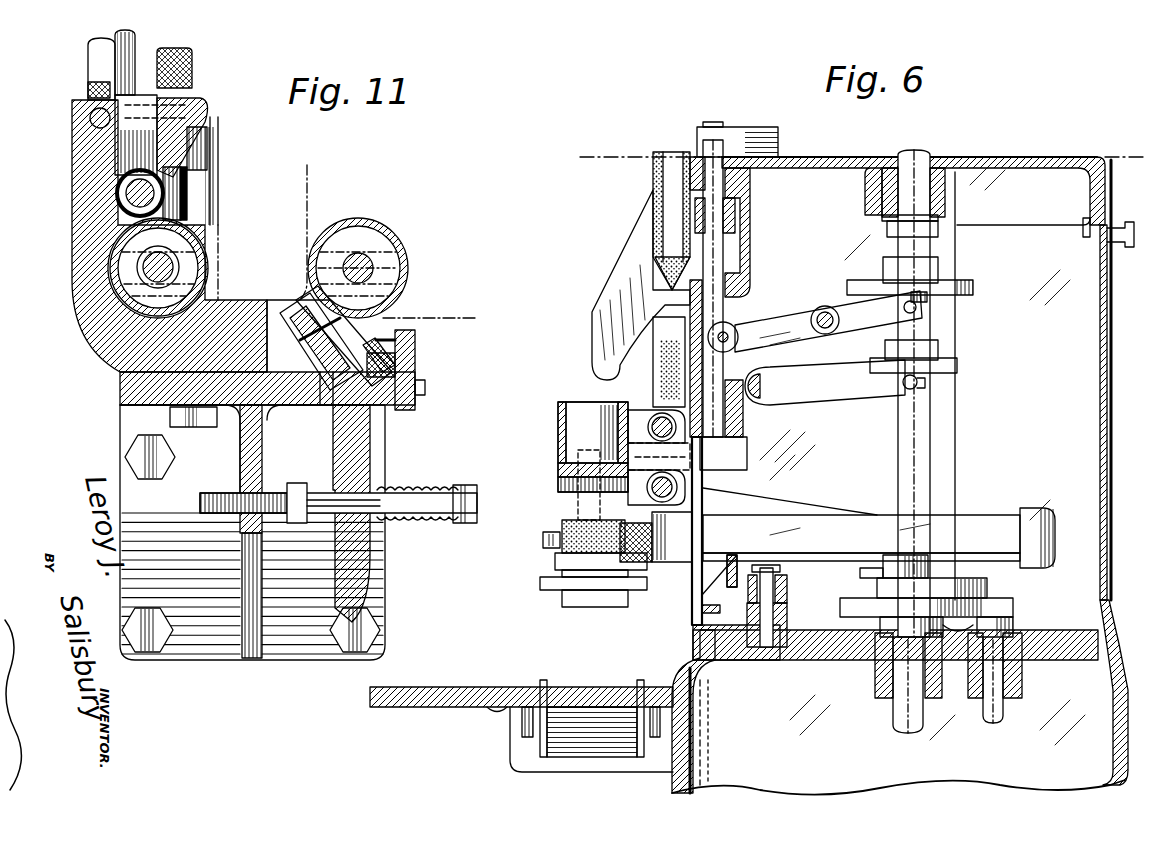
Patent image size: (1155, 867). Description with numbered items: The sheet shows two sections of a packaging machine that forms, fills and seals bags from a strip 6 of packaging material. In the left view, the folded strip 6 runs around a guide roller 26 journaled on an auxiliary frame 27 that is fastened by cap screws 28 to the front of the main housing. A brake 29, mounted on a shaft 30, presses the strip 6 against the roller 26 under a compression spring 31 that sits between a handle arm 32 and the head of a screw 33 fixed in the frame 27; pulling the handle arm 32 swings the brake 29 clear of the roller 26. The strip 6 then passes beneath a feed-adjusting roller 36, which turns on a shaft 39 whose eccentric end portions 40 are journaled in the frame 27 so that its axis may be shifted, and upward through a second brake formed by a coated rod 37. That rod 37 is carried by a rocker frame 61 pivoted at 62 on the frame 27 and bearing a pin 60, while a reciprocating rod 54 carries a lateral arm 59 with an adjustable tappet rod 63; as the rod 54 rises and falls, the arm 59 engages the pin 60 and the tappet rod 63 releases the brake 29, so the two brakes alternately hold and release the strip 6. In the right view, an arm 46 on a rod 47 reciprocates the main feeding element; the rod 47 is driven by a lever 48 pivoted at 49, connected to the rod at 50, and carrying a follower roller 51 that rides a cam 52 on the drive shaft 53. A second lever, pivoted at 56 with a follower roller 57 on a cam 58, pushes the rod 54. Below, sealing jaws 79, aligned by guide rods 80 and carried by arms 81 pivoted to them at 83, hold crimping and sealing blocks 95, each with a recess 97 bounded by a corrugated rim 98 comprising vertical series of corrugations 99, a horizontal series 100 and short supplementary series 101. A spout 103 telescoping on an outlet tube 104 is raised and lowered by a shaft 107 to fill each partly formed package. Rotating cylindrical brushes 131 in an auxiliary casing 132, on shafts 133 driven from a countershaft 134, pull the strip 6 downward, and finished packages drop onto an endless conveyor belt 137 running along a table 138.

In FIG. 11, the strip 6 is at (466, 318).
In FIG. 11, the guide roller 26 is at (392, 242).
In FIG. 11, the auxiliary frame 27 is at (122, 370).
In FIG. 11, the cap screws 28 is at (128, 453).
In FIG. 11, the brake 29 is at (305, 313).
In FIG. 11, the shaft 30 is at (418, 392).
In FIG. 11, the compression spring 31 is at (405, 520).
In FIG. 11, the handle arm 32 is at (366, 558).
In FIG. 11, the screw 33 is at (470, 487).
In FIG. 11, the feed-adjusting roller 36 is at (112, 268).
In FIG. 11, the rod 37 is at (126, 192).
In FIG. 11, the shaft 39 is at (139, 262).
In FIG. 11, the eccentric end portions 40 is at (165, 255).
In FIG. 6, the arm 46 is at (736, 211).
In FIG. 6, the rod 47 is at (718, 250).
In FIG. 6, the lever 48 is at (778, 322).
In FIG. 6, the pivot 49 is at (825, 306).
In FIG. 6, the pivotal connection 50 is at (731, 327).
In FIG. 6, the follower roller 51 is at (918, 316).
In FIG. 6, the cam 52 is at (926, 300).
In FIG. 6, the drive shaft 53 is at (926, 152).
In FIG. 11, the rod 54 is at (92, 78).
In FIG. 6, the pivot 56 is at (765, 372).
In FIG. 6, the follower roller 57 is at (905, 389).
In FIG. 6, the cam 58 is at (950, 366).
In FIG. 11, the lateral arm 59 is at (207, 155).
In FIG. 11, the pin 60 is at (188, 110).
In FIG. 11, the rocker frame 61 is at (175, 128).
In FIG. 11, the pivot 62 is at (90, 118).
In FIG. 11, the tappet rod 63 is at (166, 192).
In FIG. 6, the sealing jaws 79 is at (548, 415).
In FIG. 6, the guide rods 80 is at (674, 487).
In FIG. 6, the arm 81 is at (641, 458).
In FIG. 6, the pivotal connection 83 is at (560, 467).
In FIG. 6, the crimping and sealing block 95 is at (609, 402).
In FIG. 6, the recess 97 is at (560, 430).
In FIG. 6, the rim 98 is at (562, 402).
In FIG. 6, the vertical series of corrugations 99 is at (620, 418).
In FIG. 6, the horizontal series of corrugations 100 is at (614, 446).
In FIG. 6, the short series of corrugations 101 is at (560, 482).
In FIG. 6, the spout 103 is at (592, 335).
In FIG. 6, the outlet tube 104 is at (655, 178).
In FIG. 6, the shaft 107 is at (668, 292).
In FIG. 6, the cylindrical brushes 131 is at (565, 528).
In FIG. 6, the auxiliary casing 132 is at (986, 515).
In FIG. 6, the shafts 133 is at (545, 540).
In FIG. 6, the countershaft 134 is at (1000, 600).
In FIG. 6, the endless conveyor belt 137 is at (582, 690).
In FIG. 6, the table 138 is at (456, 687).